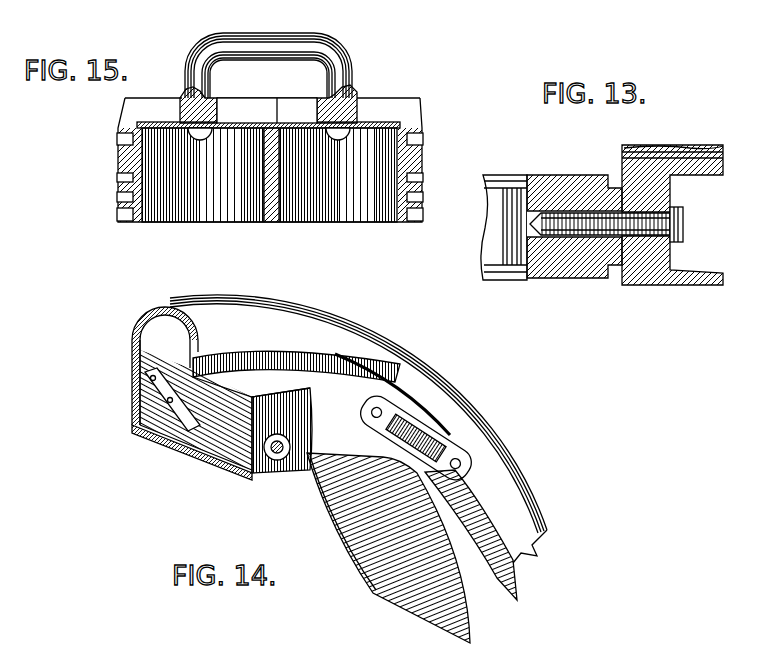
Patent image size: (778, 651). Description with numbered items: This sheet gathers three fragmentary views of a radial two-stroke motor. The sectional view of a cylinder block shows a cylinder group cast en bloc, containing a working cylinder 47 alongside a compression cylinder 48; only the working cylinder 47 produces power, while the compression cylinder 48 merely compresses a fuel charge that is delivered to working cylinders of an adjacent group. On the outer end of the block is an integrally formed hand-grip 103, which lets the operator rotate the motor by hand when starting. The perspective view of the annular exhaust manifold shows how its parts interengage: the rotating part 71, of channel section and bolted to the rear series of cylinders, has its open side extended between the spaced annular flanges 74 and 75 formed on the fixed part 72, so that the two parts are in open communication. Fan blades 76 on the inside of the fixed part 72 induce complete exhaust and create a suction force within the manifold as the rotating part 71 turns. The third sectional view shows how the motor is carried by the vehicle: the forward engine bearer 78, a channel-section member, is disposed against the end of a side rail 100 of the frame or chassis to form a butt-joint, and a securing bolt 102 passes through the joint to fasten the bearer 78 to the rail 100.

In FIG. 15, the working cylinder 47 is at (220, 224).
In FIG. 15, the compression cylinder 48 is at (345, 224).
In FIG. 15, the hand-grip 103 is at (264, 46).
In FIG. 13, the side rail 100 is at (541, 177).
In FIG. 13, the engine bearer 78 is at (688, 157).
In FIG. 13, the securing bolt 102 is at (678, 224).
In FIG. 14, the fixed part 72 is at (357, 310).
In FIG. 14, the annular flange 74 is at (240, 356).
In FIG. 14, the fan blade 76 is at (133, 412).
In FIG. 14, the annular flange 75 is at (170, 440).
In FIG. 14, the rotating part 71 is at (327, 360).